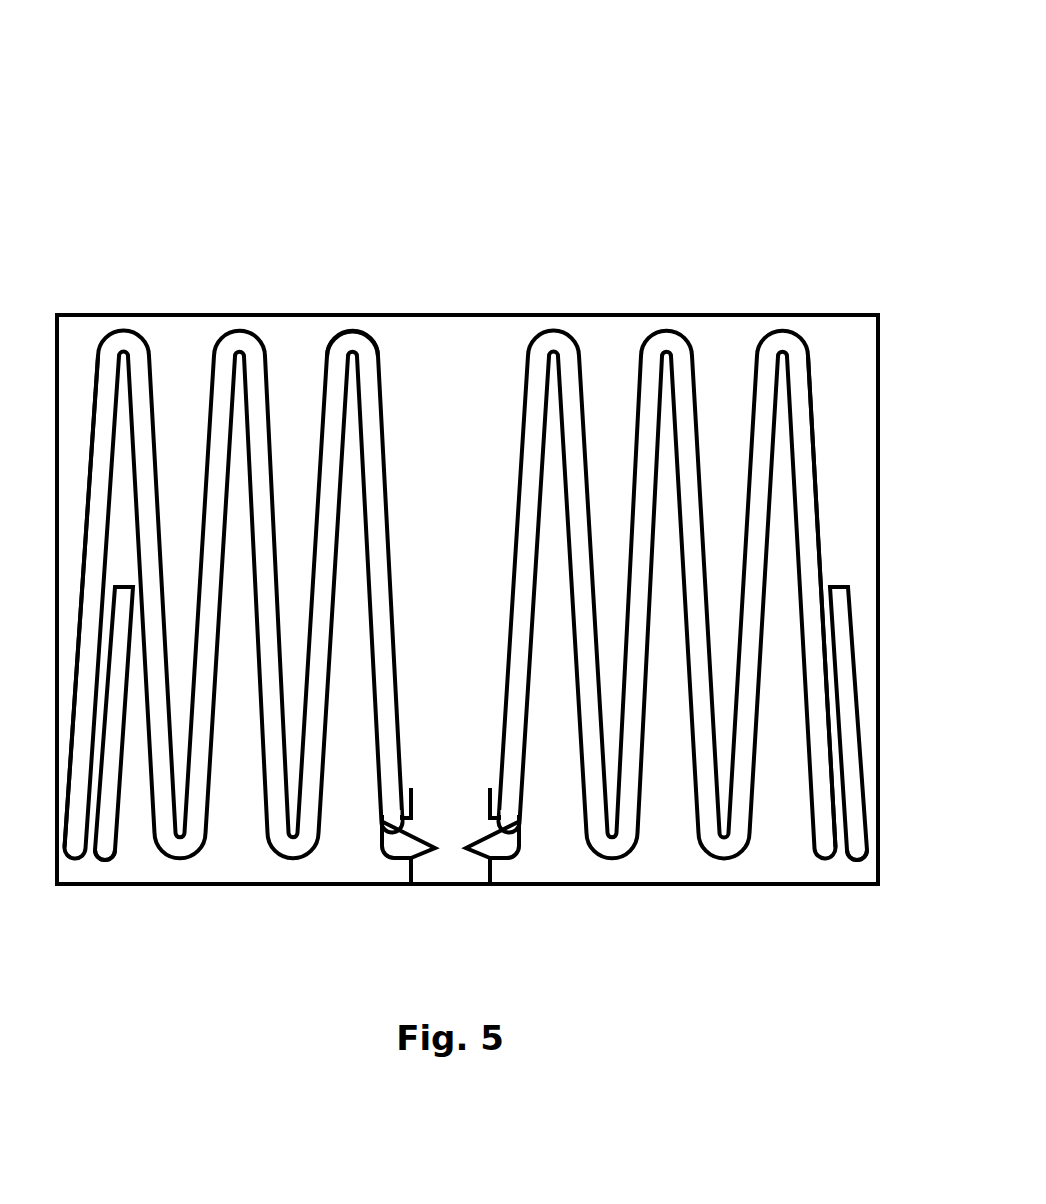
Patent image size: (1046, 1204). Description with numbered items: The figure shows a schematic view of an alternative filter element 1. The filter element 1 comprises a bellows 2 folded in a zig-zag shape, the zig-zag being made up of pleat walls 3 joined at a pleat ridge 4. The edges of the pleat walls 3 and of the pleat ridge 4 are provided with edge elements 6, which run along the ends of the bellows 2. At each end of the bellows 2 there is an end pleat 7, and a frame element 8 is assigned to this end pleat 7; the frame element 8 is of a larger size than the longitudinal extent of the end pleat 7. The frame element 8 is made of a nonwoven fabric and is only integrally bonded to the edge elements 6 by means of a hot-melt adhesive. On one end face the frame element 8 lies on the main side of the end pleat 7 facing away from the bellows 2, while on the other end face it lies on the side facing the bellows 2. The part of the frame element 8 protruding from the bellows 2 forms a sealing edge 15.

The filter element 1 is at (150, 135).
The bellows 2 is at (141, 420).
The pleat walls 3 is at (692, 378).
The pleat ridge 4 is at (358, 328).
The edge elements 6 is at (455, 385).
The end pleat 7 is at (93, 578).
The frame element 8 is at (110, 793).
The sealing edge 15 is at (103, 860).